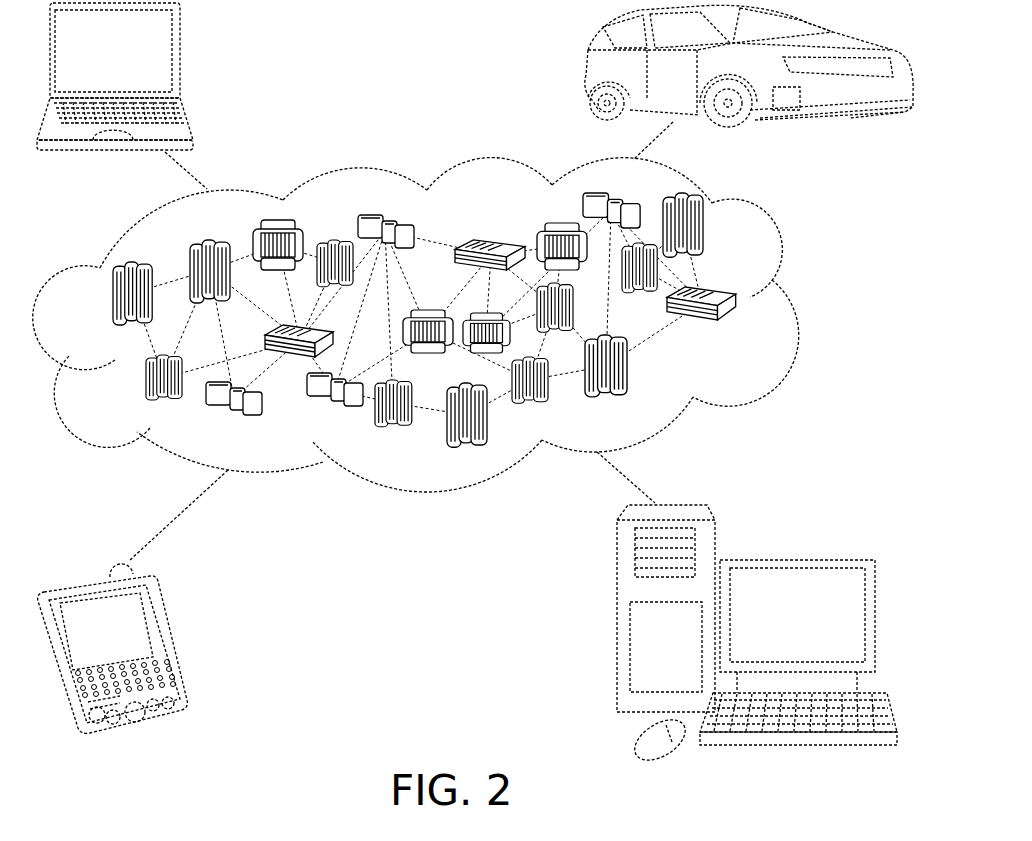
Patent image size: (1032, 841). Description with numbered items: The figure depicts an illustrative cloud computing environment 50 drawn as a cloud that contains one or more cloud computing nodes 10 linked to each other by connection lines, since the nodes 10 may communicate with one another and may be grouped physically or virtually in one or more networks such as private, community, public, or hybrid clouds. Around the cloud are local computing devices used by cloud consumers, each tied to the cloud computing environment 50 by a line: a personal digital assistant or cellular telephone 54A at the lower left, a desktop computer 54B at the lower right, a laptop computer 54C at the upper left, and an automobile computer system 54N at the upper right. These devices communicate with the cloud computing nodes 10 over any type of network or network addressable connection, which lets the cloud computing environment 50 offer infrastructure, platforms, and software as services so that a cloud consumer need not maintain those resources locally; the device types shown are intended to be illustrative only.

The cloud computing nodes 10 is at (473, 385).
The cloud computing environment 50 is at (795, 298).
The personal digital assistant (PDA) or cellular telephone 54A is at (168, 643).
The desktop computer 54B is at (794, 558).
The laptop computer 54C is at (180, 62).
The automobile computer system 54N is at (590, 75).